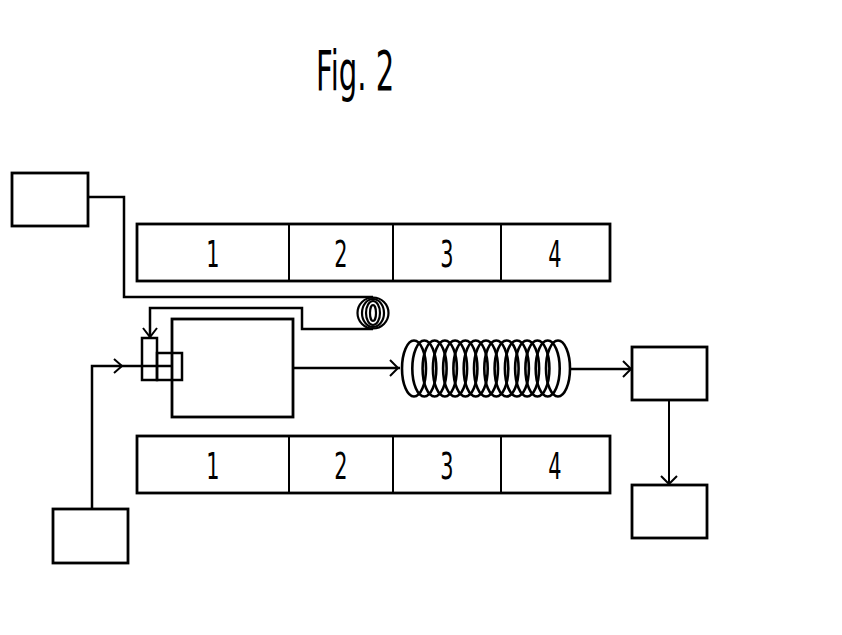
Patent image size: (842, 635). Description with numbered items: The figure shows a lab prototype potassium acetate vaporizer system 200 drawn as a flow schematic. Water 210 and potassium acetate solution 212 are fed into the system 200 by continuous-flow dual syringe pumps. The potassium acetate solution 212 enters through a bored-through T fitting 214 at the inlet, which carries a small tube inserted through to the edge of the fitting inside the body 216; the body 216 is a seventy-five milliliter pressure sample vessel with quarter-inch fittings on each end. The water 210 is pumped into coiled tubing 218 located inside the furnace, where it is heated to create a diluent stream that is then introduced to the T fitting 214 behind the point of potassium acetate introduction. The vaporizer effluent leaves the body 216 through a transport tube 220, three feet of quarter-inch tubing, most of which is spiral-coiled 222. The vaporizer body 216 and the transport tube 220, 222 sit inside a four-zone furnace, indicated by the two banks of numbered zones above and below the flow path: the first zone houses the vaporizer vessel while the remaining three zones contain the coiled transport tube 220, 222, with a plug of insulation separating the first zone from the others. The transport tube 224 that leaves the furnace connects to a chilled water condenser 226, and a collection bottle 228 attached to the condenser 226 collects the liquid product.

The potassium acetate vaporizer system 200 is at (110, 92).
The water 210 is at (192, 235).
The potassium acetate solution 212 is at (112, 461).
The T fitting 214 is at (132, 352).
The body 216 is at (232, 368).
The coiled tubing 218 is at (398, 318).
The transport tube 220 is at (346, 390).
The spiral-coiled transport tube 222 is at (585, 332).
The transport tube leaving furnace 224 is at (612, 353).
The chilled water condenser 226 is at (669, 373).
The collection bottle 228 is at (669, 469).